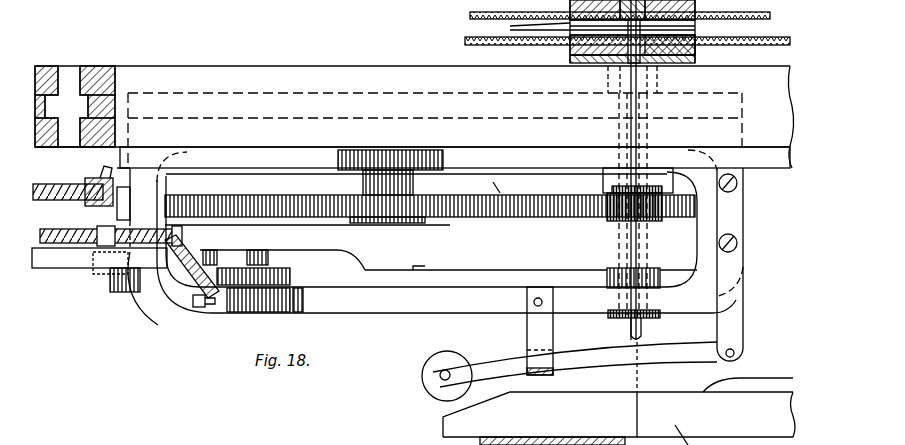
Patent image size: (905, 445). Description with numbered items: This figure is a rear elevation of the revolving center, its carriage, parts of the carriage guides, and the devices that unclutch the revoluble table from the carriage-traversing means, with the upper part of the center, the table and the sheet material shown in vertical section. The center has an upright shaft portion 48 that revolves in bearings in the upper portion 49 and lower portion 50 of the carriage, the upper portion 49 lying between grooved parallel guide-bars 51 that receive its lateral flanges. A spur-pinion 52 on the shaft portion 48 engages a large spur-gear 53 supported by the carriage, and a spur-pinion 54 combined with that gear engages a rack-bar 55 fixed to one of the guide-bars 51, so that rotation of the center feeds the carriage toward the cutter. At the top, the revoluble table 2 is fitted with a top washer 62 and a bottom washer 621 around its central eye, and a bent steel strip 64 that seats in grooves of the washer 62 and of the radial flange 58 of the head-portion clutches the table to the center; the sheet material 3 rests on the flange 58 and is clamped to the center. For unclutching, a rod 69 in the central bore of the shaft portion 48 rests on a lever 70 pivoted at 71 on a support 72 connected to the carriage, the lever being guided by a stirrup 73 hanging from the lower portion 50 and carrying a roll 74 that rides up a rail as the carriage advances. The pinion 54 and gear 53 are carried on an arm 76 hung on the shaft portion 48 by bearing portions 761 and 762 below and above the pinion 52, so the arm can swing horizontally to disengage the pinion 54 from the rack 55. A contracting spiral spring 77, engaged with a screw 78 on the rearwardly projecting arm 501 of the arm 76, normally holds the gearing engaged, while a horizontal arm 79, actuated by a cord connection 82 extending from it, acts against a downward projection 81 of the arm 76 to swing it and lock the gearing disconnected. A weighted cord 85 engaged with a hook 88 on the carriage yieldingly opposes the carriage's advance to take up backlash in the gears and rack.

The revoluble table 2 is at (465, 41).
The sheet material 3 is at (470, 15).
The upright shaft portion 48 is at (615, 130).
The upper portion of the carriage 49 is at (742, 128).
The lower portion of the carriage 50 is at (435, 313).
The guide-bars 51 is at (100, 66).
The spur-pinion 52 is at (672, 193).
The spur-gear 53 is at (508, 217).
The spur-pinion 54 is at (340, 170).
The rack-bar 55 is at (258, 163).
The radial flange 58 is at (697, 22).
The top washer 62 is at (740, 29).
The strip 64 is at (568, 26).
The rod 69 is at (630, 331).
The lever 70 is at (655, 352).
The pivot 71 is at (736, 354).
The support 72 is at (744, 301).
The stirrup 73 is at (527, 334).
The roll 74 is at (422, 373).
The arm 76 is at (457, 252).
The contracting spiral spring 77 is at (182, 280).
The screw 78 is at (167, 236).
The horizontal arm 79 is at (110, 282).
The downward projection 81 is at (270, 256).
The threaded shaft 82 is at (72, 232).
The cord 85 is at (50, 184).
The hook 88 is at (96, 181).
The rearwardly projecting arm 501 is at (250, 303).
The bottom washer 621 is at (697, 52).
The bearing portion 761 is at (598, 255).
The bearing portion 762 is at (613, 170).